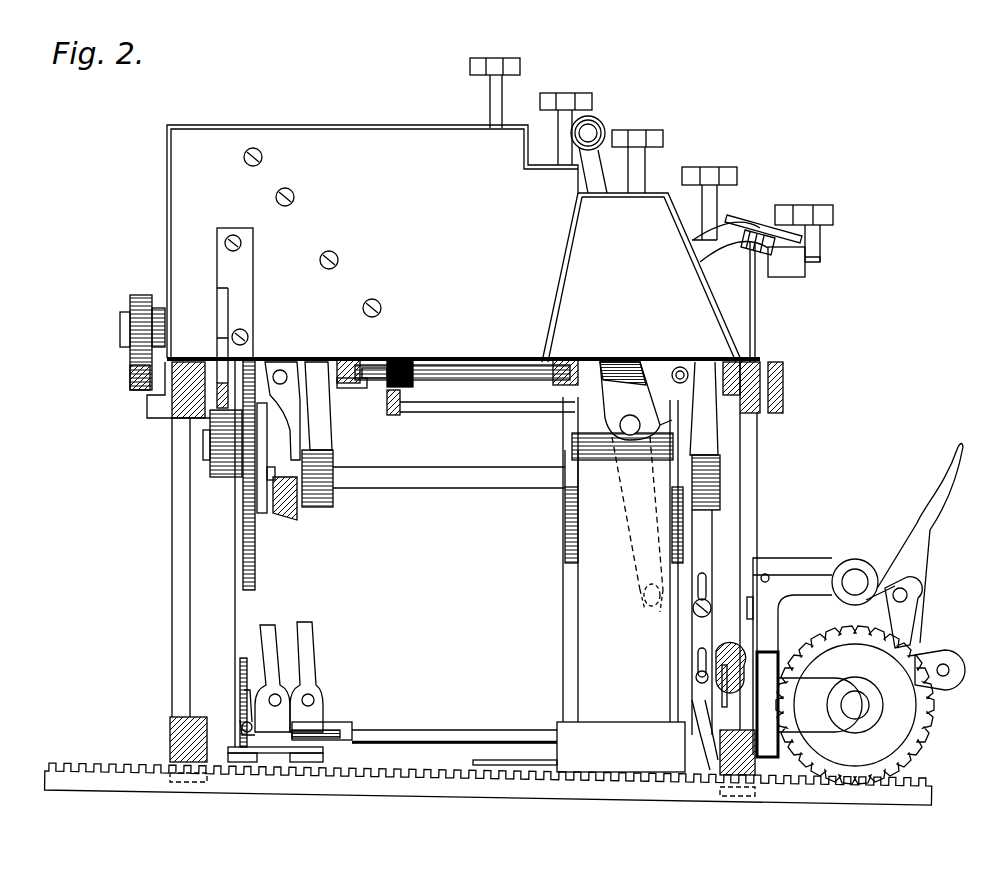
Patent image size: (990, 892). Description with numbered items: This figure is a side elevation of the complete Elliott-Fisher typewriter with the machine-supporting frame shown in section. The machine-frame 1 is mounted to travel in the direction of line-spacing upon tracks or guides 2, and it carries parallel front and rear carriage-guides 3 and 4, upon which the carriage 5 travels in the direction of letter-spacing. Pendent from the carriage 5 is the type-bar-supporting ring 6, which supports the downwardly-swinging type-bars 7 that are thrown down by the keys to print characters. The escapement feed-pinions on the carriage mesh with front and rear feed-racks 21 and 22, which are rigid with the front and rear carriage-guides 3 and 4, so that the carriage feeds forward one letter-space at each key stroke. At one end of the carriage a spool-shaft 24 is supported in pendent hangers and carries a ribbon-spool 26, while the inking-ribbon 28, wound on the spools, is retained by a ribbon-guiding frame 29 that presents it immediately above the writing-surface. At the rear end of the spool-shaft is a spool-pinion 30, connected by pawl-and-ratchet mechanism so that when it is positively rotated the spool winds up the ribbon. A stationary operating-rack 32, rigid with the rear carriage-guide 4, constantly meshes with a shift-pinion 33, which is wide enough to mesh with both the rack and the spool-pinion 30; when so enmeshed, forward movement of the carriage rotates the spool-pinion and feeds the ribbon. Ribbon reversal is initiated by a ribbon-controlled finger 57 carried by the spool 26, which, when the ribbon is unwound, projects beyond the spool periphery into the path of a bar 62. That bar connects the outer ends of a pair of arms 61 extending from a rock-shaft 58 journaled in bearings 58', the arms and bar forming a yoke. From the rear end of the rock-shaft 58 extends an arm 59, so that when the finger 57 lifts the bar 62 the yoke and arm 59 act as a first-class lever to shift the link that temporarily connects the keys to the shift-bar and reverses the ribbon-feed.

The machine-frame 1 is at (172, 594).
The tracks or guides 2 is at (118, 766).
The front carriage-guide 3 is at (752, 418).
The rear carriage-guide 4 is at (176, 420).
The carriage 5 is at (470, 357).
The type-bar-supporting ring 6 is at (410, 730).
The type-bars 7 is at (272, 660).
The front feed-rack 21 is at (716, 418).
The rear feed-rack 22 is at (130, 378).
The spool-shaft 24 is at (416, 488).
The ribbon-spool 26 is at (565, 540).
The inking-ribbon 28 is at (620, 559).
The ribbon-guiding frame 29 is at (621, 747).
The spool-pinion 30 is at (255, 578).
The operating-rack 32 is at (228, 387).
The shift-pinion 33 is at (215, 470).
The ribbon-controlled finger 57 is at (604, 420).
The rock-shaft 58 is at (462, 382).
The bearings 58' is at (475, 356).
The arm 59 is at (358, 390).
The arms 61 is at (392, 400).
The bar 62 is at (445, 412).